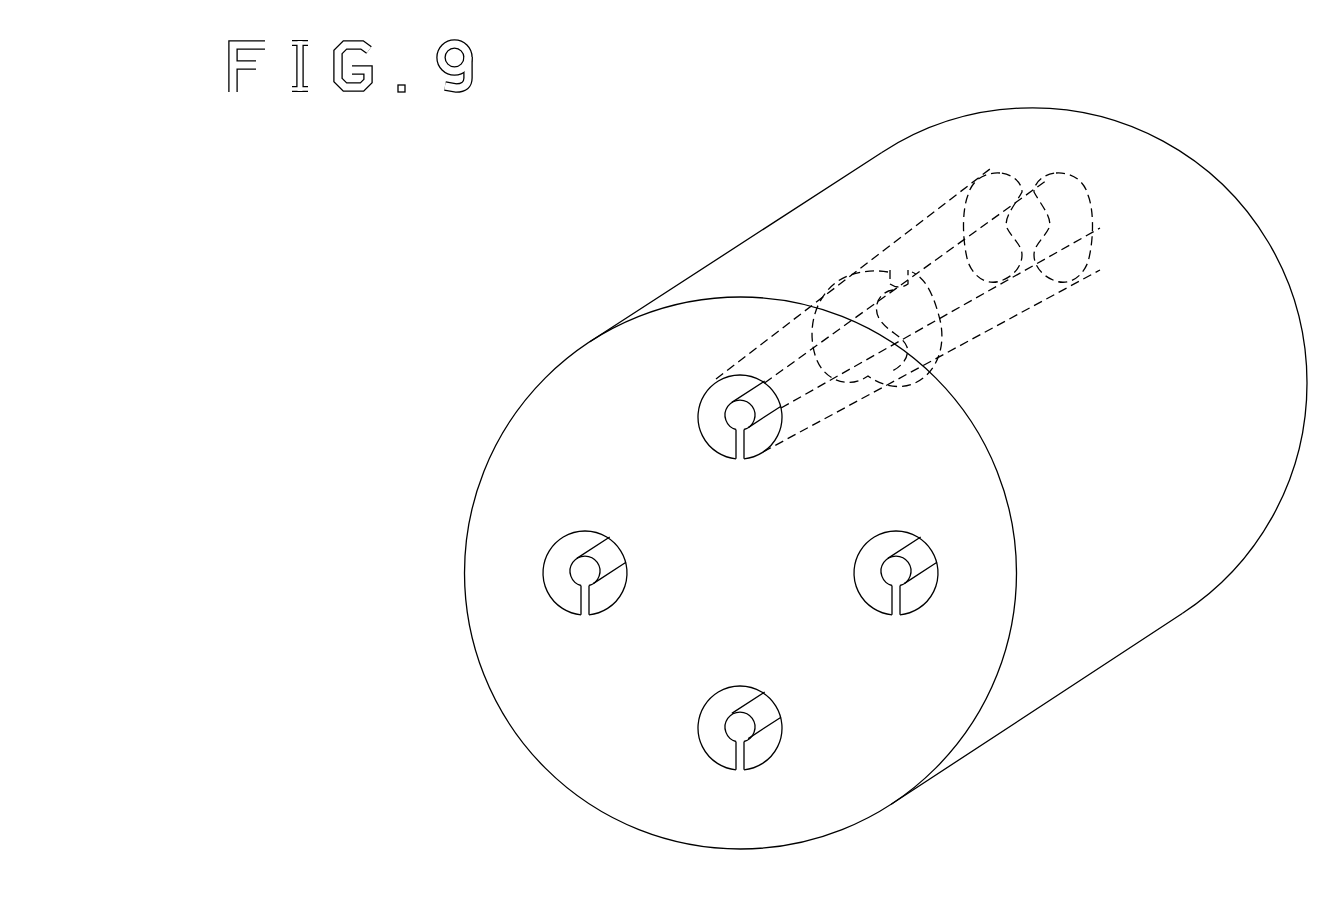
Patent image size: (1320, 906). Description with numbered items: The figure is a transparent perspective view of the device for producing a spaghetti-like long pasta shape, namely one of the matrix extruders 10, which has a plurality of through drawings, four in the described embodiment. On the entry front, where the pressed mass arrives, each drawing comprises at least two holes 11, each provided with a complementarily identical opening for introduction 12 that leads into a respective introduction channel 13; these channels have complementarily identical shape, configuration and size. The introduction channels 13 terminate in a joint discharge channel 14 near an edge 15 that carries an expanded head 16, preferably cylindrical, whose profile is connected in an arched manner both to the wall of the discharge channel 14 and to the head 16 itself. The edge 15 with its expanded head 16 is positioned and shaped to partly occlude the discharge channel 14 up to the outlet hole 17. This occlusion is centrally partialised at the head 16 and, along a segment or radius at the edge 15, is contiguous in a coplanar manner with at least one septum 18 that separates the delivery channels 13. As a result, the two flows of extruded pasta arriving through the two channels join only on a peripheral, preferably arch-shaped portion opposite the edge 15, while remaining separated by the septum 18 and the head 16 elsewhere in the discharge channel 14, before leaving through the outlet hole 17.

The matrix extruder 10 is at (550, 430).
The holes 11 is at (1024, 165).
The opening for introduction 12 is at (1000, 175).
The introduction channel 13 is at (937, 220).
The discharge channel 14 is at (712, 424).
The edge 15 is at (715, 447).
The expanded head 16 is at (736, 404).
The outlet hole 17 is at (705, 397).
The septum 18 is at (900, 270).